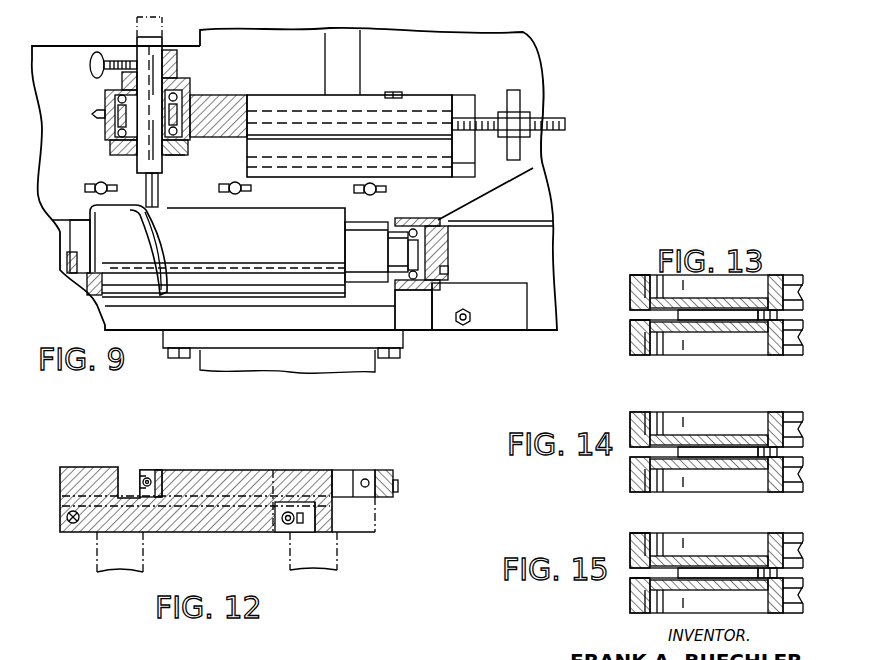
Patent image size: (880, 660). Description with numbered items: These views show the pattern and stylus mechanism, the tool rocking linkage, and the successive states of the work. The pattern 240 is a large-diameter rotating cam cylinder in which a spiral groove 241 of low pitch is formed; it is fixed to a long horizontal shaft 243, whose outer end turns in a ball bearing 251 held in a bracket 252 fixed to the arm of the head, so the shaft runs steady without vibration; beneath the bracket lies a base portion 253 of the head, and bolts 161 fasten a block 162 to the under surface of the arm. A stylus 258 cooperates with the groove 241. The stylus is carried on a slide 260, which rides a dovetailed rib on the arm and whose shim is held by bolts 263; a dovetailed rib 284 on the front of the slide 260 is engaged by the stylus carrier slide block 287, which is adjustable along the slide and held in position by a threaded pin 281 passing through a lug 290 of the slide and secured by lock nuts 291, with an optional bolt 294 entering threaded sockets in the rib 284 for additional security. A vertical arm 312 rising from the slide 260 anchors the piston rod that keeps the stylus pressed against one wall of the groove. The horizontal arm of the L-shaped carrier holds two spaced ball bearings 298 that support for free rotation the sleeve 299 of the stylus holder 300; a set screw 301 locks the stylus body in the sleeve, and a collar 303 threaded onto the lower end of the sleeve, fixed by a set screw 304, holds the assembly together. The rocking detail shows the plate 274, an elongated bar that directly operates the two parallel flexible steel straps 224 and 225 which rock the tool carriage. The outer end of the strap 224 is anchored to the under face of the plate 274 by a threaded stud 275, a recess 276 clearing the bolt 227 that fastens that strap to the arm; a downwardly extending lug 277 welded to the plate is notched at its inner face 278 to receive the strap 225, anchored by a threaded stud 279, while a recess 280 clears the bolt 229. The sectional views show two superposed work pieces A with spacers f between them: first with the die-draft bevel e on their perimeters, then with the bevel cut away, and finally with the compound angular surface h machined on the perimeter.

In FIG. 9, the bolts 161 is at (194, 360).
In FIG. 9, the block 162 is at (305, 371).
In FIG. 9, the pattern 240 is at (288, 298).
In FIG. 9, the spiral groove 241 is at (158, 253).
In FIG. 9, the horizontal shaft 243 is at (370, 282).
In FIG. 9, the ball bearing 251 is at (403, 219).
In FIG. 9, the bracket 252 is at (403, 292).
In FIG. 9, the base block 253 is at (513, 322).
In FIG. 9, the stylus 258 is at (159, 186).
In FIG. 9, the slide 260 is at (538, 86).
In FIG. 9, the bolts 263 is at (86, 190).
In FIG. 9, the threaded pin 281 is at (561, 126).
In FIG. 9, the dovetailed rib 284 is at (468, 163).
In FIG. 9, the stylus carrier slide block 287 is at (407, 110).
In FIG. 9, the lug 290 is at (513, 100).
In FIG. 9, the lock nuts 291 is at (504, 123).
In FIG. 9, the bolt 294 is at (386, 93).
In FIG. 9, the ball bearings 298 is at (185, 103).
In FIG. 9, the sleeve 299 is at (108, 152).
In FIG. 9, the stylus holder 300 is at (168, 52).
In FIG. 9, the set screw 301 is at (96, 54).
In FIG. 9, the collar 303 is at (178, 157).
In FIG. 9, the set screw 304 is at (189, 151).
In FIG. 9, the vertical arm 312 is at (338, 50).
In FIG. 12, the flexible steel strap 224 is at (222, 520).
In FIG. 12, the flexible steel strap 225 is at (342, 480).
In FIG. 12, the bolt 227 is at (286, 531).
In FIG. 12, the bolt 229 is at (156, 477).
In FIG. 12, the plate 274 is at (216, 475).
In FIG. 12, the threaded stud 275 is at (73, 525).
In FIG. 12, the recess 276 is at (310, 533).
In FIG. 12, the lug 277 is at (389, 474).
In FIG. 12, the recess 278 is at (352, 500).
In FIG. 12, the threaded stud 279 is at (367, 479).
In FIG. 12, the recess 280 is at (150, 470).
In FIG. 13, the work piece A is at (738, 300).
In FIG. 14, the work piece A is at (715, 440).
In FIG. 15, the work piece A is at (667, 562).
In FIG. 13, the double bevel e is at (630, 292).
In FIG. 13, the spacers f is at (710, 313).
In FIG. 14, the spacers f is at (690, 450).
In FIG. 15, the spacers f is at (705, 572).
In FIG. 15, the angular surface h is at (632, 545).